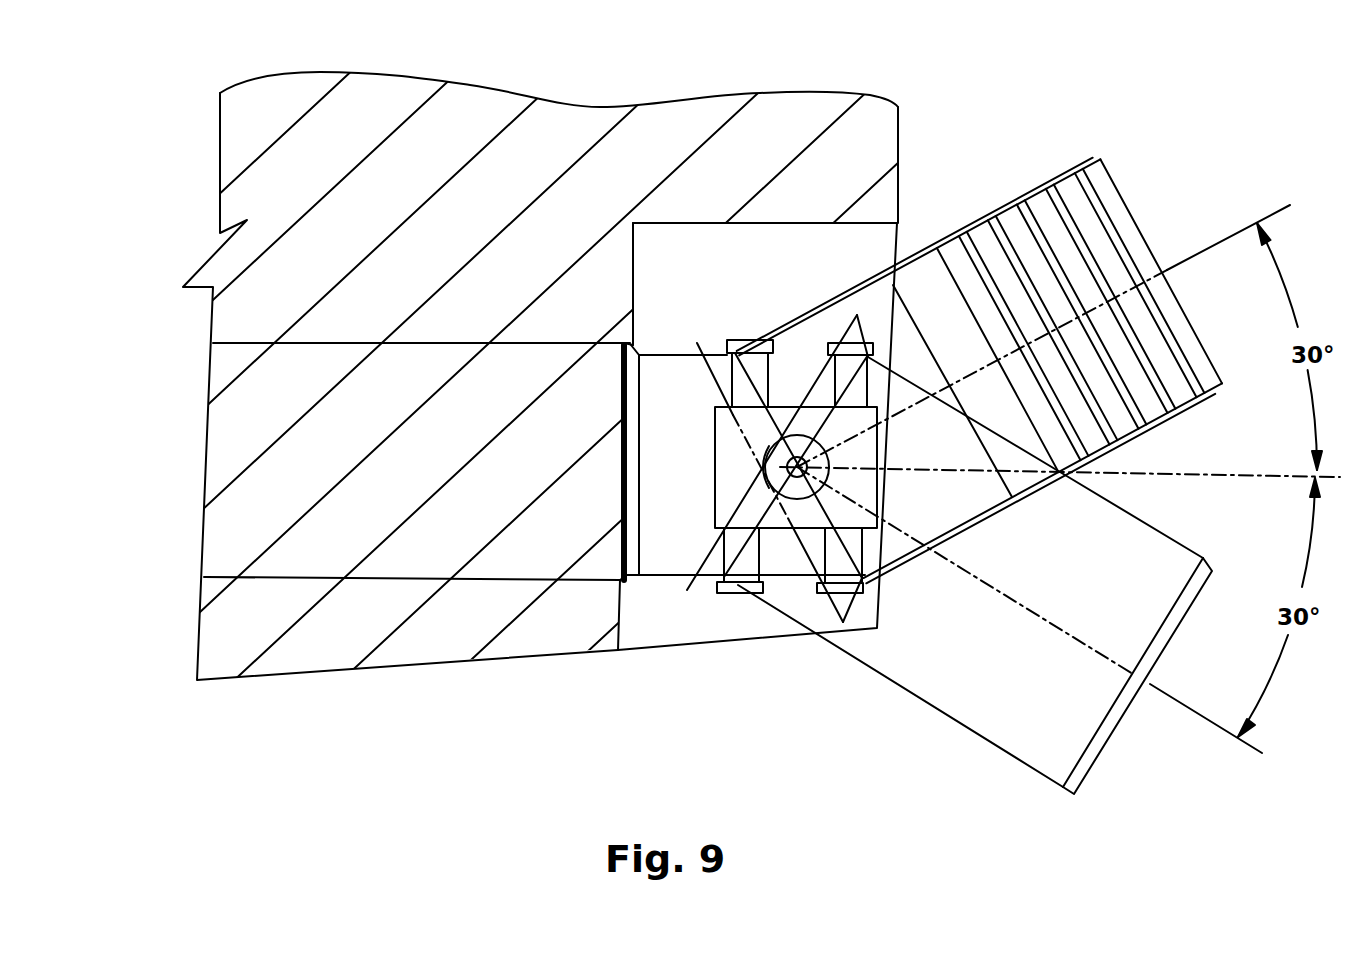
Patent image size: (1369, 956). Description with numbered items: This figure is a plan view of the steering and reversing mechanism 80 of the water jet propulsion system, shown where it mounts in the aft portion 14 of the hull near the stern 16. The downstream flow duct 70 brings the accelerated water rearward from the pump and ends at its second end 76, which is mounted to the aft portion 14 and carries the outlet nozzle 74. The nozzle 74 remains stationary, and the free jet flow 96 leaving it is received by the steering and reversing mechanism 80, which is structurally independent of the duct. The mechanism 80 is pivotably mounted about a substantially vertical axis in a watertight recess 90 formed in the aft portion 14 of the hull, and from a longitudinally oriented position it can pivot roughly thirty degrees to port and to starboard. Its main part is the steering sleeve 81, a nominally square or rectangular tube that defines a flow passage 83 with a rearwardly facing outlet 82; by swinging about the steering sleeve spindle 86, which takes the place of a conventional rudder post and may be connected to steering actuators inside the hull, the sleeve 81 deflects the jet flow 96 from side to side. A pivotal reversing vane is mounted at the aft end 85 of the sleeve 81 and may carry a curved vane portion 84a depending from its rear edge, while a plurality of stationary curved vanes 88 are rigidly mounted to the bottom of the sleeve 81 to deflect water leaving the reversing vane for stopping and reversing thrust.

The aft portion 14 is at (482, 100).
The stern 16 is at (898, 120).
The downstream flow duct 70 is at (223, 522).
The outlet nozzle 74 is at (641, 348).
The second end 76 is at (628, 342).
The steering and reversing mechanism 80 is at (1027, 147).
The steering sleeve 81 is at (948, 685).
The rearwardly facing outlet 82 is at (1133, 725).
The flow passage 83 is at (1045, 665).
The curved vane portion 84a is at (1090, 758).
The aft end 85 is at (1082, 158).
The steering sleeve spindle 86 is at (797, 456).
The stationary curved vanes 88 is at (1025, 247).
The watertight recess 90 is at (713, 627).
The free jet flow 96 is at (663, 545).